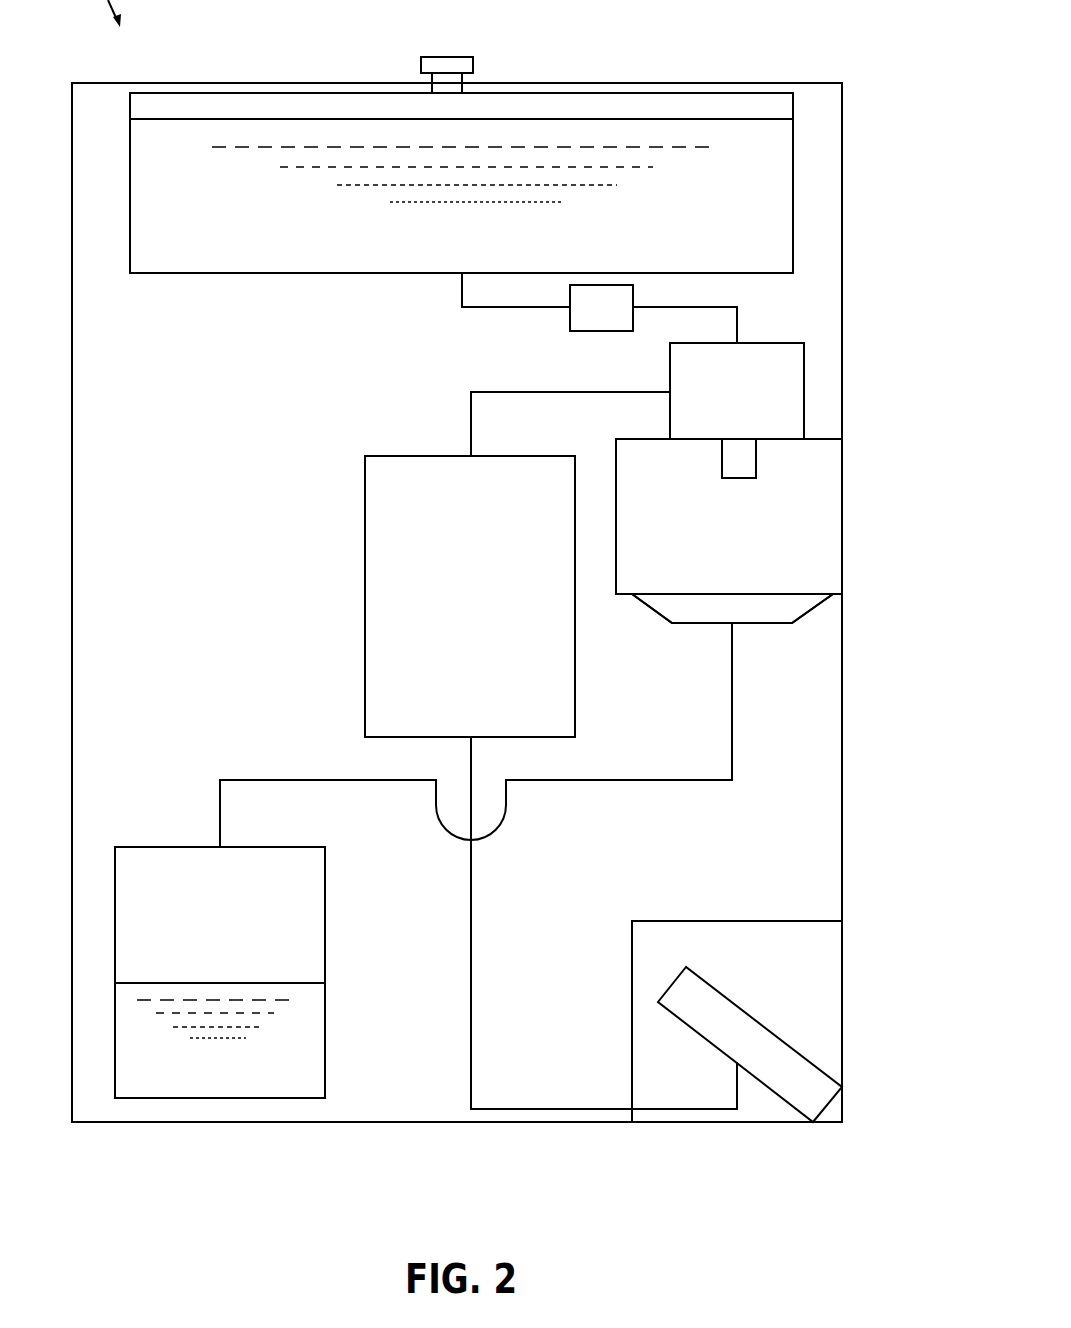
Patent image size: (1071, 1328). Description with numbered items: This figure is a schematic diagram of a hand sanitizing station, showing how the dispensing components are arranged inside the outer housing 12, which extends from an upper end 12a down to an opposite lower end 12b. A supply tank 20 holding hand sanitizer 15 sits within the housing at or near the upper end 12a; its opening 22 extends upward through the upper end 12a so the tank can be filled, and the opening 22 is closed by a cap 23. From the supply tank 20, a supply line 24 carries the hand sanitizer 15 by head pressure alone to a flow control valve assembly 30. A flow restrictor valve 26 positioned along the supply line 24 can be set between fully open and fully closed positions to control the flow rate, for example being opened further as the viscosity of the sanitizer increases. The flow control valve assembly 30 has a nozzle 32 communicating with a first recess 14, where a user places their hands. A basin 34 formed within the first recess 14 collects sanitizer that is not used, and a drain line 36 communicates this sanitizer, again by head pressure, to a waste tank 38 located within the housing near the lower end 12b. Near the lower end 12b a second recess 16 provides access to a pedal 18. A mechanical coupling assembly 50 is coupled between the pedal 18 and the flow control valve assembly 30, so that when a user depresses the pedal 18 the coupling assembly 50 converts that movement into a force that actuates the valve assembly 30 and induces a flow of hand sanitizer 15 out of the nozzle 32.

The outer housing 12 is at (843, 122).
The upper end 12a is at (309, 76).
The lower end 12b is at (266, 1132).
The first recess 14 is at (834, 458).
The hand sanitizer 15 is at (743, 214).
The second recess 16 is at (825, 955).
The pedal 18 is at (757, 1018).
The supply tank 20 is at (793, 218).
The opening 22 is at (465, 80).
The cap 23 is at (446, 56).
The supply line 24 is at (492, 308).
The flow restrictor valve 26 is at (600, 331).
The flow control valve assembly 30 is at (805, 376).
The nozzle 32 is at (722, 463).
The basin 34 is at (810, 617).
The drain line 36 is at (592, 783).
The waste tank 38 is at (325, 900).
The mechanical coupling assembly 50 is at (365, 545).